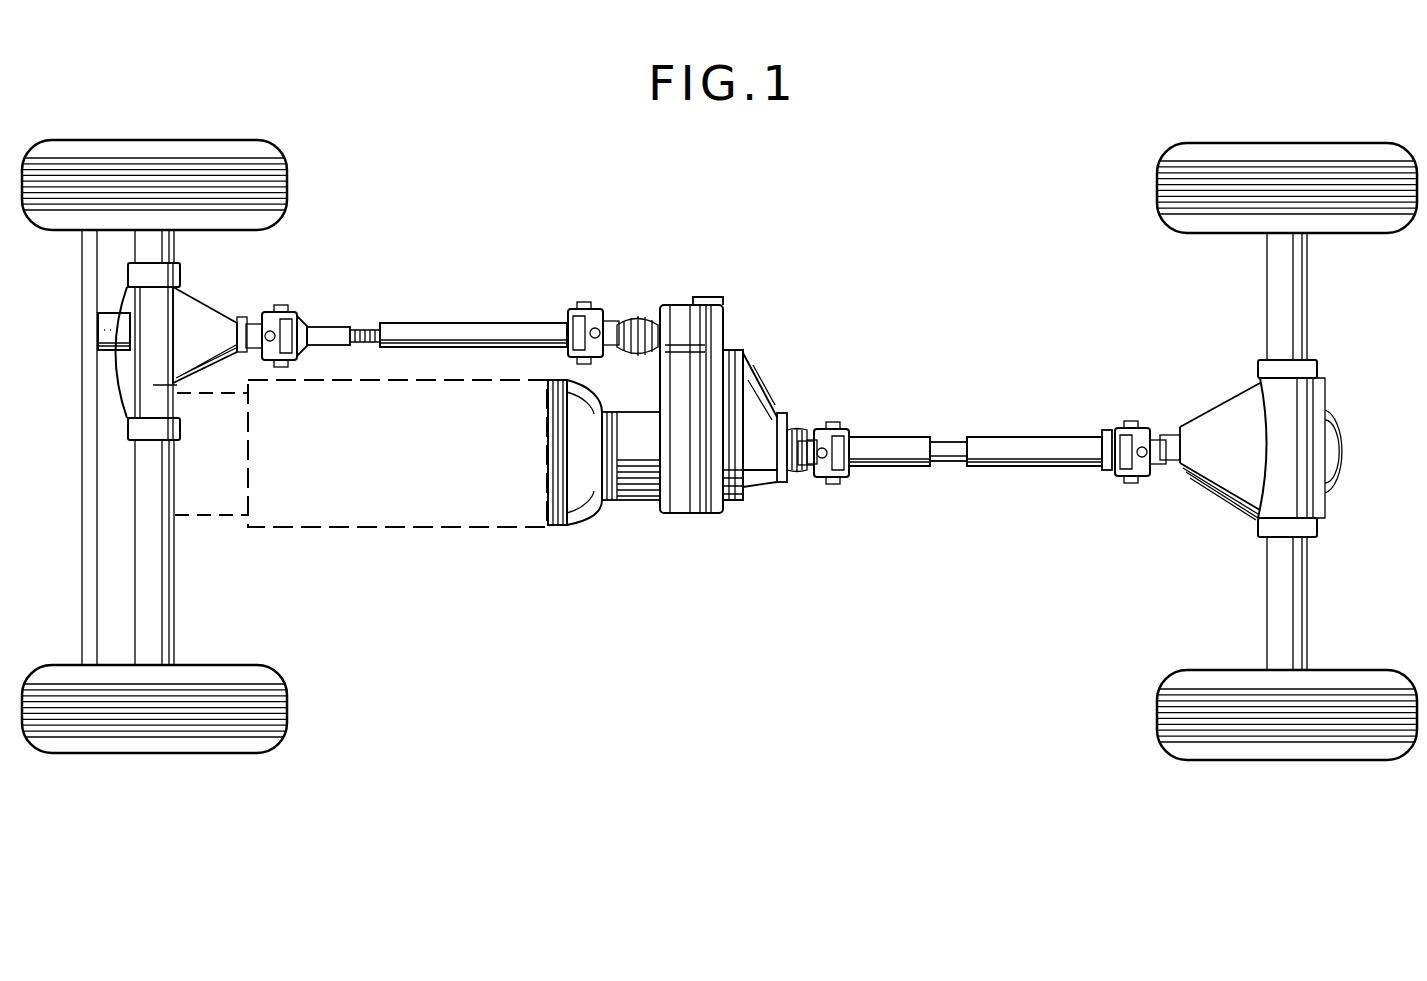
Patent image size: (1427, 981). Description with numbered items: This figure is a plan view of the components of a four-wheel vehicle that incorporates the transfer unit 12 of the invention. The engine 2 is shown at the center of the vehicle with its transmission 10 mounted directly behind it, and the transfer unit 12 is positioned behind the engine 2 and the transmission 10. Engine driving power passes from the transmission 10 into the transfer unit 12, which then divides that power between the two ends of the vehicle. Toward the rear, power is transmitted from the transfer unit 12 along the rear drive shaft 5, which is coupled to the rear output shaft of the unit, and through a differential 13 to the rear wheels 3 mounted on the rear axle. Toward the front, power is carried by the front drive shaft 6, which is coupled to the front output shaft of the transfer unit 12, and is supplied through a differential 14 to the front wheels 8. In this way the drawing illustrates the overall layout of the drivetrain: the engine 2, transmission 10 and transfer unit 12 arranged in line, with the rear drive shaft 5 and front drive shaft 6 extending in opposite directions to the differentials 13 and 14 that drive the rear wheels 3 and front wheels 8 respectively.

The engine 2 is at (417, 490).
The rear wheels 3 is at (1218, 148).
The rear drive shaft 5 is at (1030, 443).
The front drive shaft 6 is at (487, 327).
The front wheels 8 is at (222, 145).
The transmission 10 is at (582, 513).
The transfer unit 12 is at (683, 513).
The differential 13 is at (1218, 473).
The differential 14 is at (210, 310).